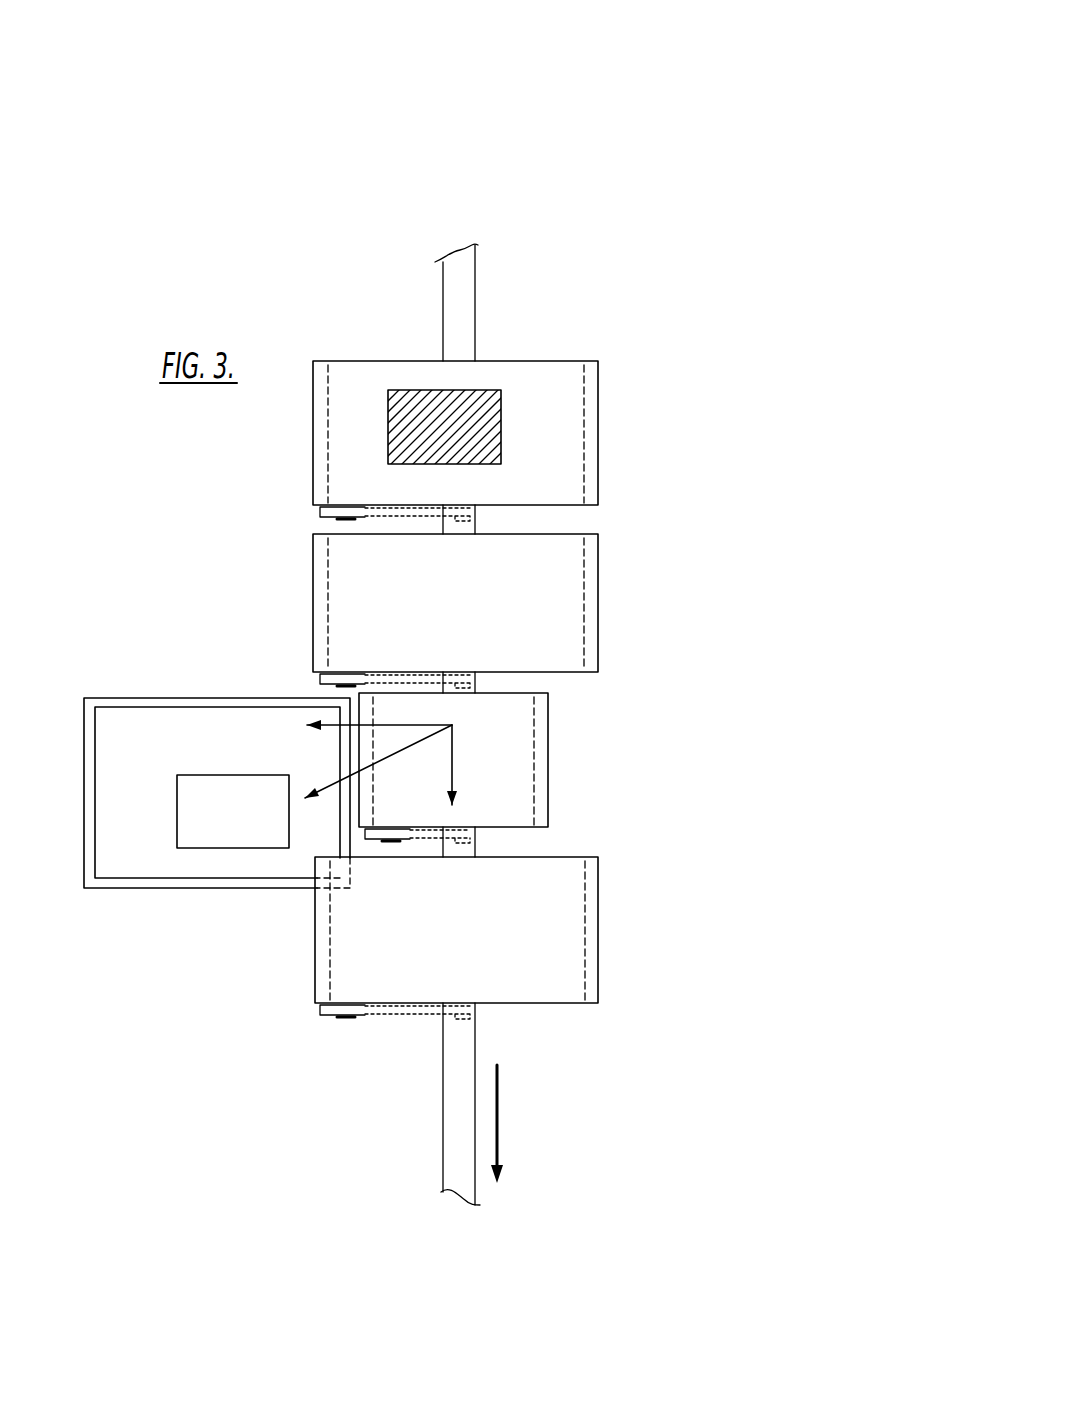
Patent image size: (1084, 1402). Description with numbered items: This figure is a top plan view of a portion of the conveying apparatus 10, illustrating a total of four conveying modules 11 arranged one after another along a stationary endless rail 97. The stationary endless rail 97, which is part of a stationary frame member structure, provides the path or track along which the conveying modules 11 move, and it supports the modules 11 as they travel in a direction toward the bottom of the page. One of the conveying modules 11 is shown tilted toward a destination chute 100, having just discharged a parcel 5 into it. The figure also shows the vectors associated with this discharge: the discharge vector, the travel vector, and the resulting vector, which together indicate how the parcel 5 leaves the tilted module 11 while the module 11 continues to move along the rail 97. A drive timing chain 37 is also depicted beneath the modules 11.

The conveying apparatus 10 is at (637, 130).
The conveying module 11 is at (760, 1012).
The parcel 5 is at (450, 441).
The destination chute 100 is at (193, 735).
The drive timing chain 37 is at (402, 1012).
The stationary endless rail 97 is at (500, 1213).